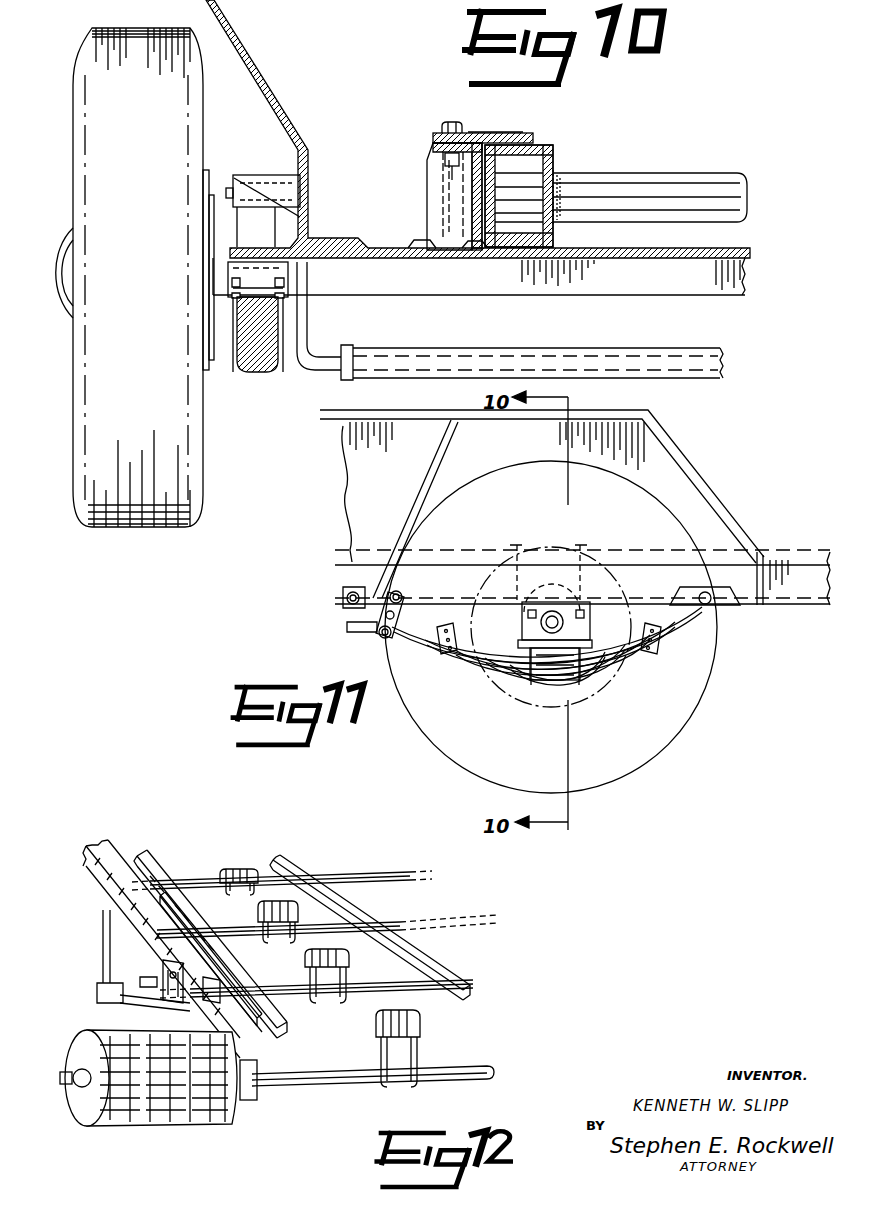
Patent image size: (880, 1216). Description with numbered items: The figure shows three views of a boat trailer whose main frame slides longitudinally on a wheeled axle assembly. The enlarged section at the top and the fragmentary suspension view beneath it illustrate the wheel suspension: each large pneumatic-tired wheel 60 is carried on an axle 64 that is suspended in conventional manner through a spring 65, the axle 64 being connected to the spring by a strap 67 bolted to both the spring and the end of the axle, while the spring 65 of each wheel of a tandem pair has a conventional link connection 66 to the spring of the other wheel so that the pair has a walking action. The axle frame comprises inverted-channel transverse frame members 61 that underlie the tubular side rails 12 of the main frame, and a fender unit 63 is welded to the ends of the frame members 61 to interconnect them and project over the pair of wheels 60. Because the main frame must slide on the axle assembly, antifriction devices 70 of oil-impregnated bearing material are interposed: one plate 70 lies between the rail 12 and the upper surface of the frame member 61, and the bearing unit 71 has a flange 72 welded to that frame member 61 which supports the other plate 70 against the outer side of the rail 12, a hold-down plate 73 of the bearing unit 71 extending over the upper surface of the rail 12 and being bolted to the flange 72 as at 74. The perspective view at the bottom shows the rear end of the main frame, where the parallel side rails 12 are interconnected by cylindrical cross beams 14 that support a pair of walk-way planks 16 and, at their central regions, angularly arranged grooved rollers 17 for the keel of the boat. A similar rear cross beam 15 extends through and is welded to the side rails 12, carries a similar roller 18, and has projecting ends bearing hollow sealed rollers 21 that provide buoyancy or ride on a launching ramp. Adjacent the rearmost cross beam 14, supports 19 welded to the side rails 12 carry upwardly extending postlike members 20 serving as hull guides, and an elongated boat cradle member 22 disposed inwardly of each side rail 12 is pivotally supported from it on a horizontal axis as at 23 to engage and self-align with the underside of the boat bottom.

In FIG. 10, the tubular longitudinal side member 12 is at (558, 160).
In FIG. 11, the tubular longitudinal side member 12 is at (798, 558).
In FIG. 12, the tubular longitudinal side member 12 is at (92, 850).
In FIG. 10, the cross beam 14 is at (700, 185).
In FIG. 12, the cross beam 14 is at (200, 878).
In FIG. 12, the rear cross beam 15 is at (476, 1064).
In FIG. 12, the walk-way plank 16 is at (145, 853).
In FIG. 12, the grooved roller 17 is at (240, 868).
In FIG. 12, the roller 18 is at (376, 1020).
In FIG. 12, the support 19 is at (114, 1005).
In FIG. 12, the postlike member 20 is at (104, 922).
In FIG. 12, the hollow sealed roller 21 is at (168, 1120).
In FIG. 12, the boat cradle member 22 is at (212, 972).
In FIG. 12, the pivot axis 23 is at (252, 1022).
In FIG. 10, the wheel 60 is at (197, 470).
In FIG. 11, the wheel 60 is at (662, 770).
In FIG. 10, the frame member 61 is at (672, 290).
In FIG. 10, the fender unit 63 is at (250, 50).
In FIG. 11, the fender unit 63 is at (698, 490).
In FIG. 10, the axle 64 is at (560, 350).
In FIG. 11, the axle 64 is at (548, 600).
In FIG. 10, the spring 65 is at (255, 372).
In FIG. 11, the spring 65 is at (690, 700).
In FIG. 11, the link connection 66 is at (362, 638).
In FIG. 10, the strap 67 is at (311, 250).
In FIG. 11, the strap 67 is at (503, 672).
In FIG. 10, the antifriction device 70 is at (470, 200).
In FIG. 10, the bearing unit 71 is at (522, 128).
In FIG. 10, the flange 72 is at (460, 230).
In FIG. 10, the hold-down plate 73 is at (488, 134).
In FIG. 10, the bolt 74 is at (448, 124).